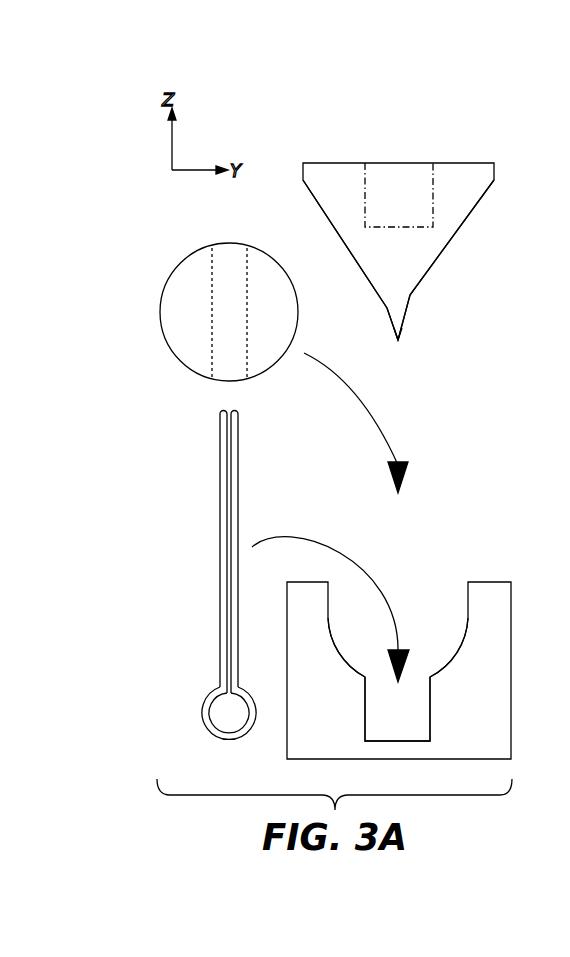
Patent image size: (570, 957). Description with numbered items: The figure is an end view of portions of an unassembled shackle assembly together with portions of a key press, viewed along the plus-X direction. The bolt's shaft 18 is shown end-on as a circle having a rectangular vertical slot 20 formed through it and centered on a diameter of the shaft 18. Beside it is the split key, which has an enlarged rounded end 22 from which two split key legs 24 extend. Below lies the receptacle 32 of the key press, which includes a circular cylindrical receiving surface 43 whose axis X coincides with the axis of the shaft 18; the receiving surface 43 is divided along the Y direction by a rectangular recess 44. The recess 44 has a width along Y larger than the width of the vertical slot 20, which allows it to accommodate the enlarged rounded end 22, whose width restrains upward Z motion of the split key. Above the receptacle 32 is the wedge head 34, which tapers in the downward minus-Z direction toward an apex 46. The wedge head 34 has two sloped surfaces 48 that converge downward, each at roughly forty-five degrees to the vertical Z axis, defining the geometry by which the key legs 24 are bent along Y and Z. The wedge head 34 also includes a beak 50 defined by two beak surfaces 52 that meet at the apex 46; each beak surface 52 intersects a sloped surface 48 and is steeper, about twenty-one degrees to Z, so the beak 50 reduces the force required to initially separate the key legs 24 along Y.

The shaft 18 is at (160, 306).
The vertical slot 20 is at (211, 360).
The enlarged rounded end 22 is at (204, 712).
The split key legs 24 is at (220, 487).
The receptacle 32 is at (495, 736).
The wedge head 34 is at (443, 175).
The receiving surface 43 is at (462, 644).
The recess 44 is at (403, 727).
The apex 46 is at (398, 340).
The sloped surfaces 48 is at (317, 205).
The beak 50 is at (394, 316).
The beak surfaces 52 is at (412, 310).